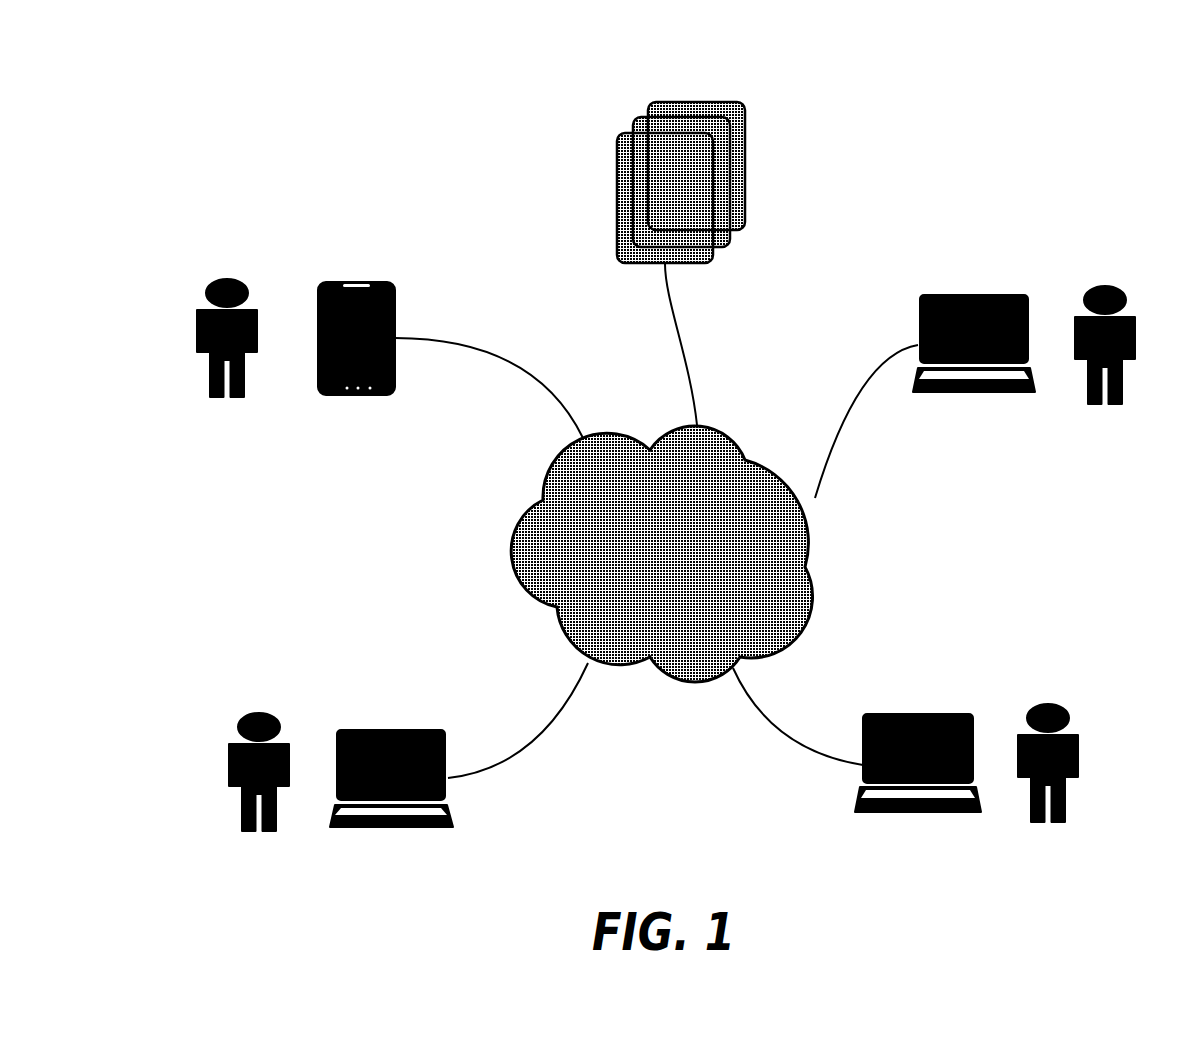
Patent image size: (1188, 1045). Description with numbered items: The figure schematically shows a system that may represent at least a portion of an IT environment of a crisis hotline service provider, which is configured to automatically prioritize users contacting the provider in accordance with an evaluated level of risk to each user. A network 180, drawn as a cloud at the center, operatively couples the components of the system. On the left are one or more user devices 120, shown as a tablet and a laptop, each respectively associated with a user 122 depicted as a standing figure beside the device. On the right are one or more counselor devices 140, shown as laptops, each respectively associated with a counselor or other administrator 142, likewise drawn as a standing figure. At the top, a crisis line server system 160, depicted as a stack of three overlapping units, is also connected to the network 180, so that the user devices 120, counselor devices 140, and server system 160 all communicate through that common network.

The user device 120 is at (357, 280).
The user 122 is at (228, 278).
The counselor device 140 is at (975, 295).
The counselor 142 is at (1107, 285).
The crisis line server system 160 is at (697, 102).
The network 180 is at (661, 554).